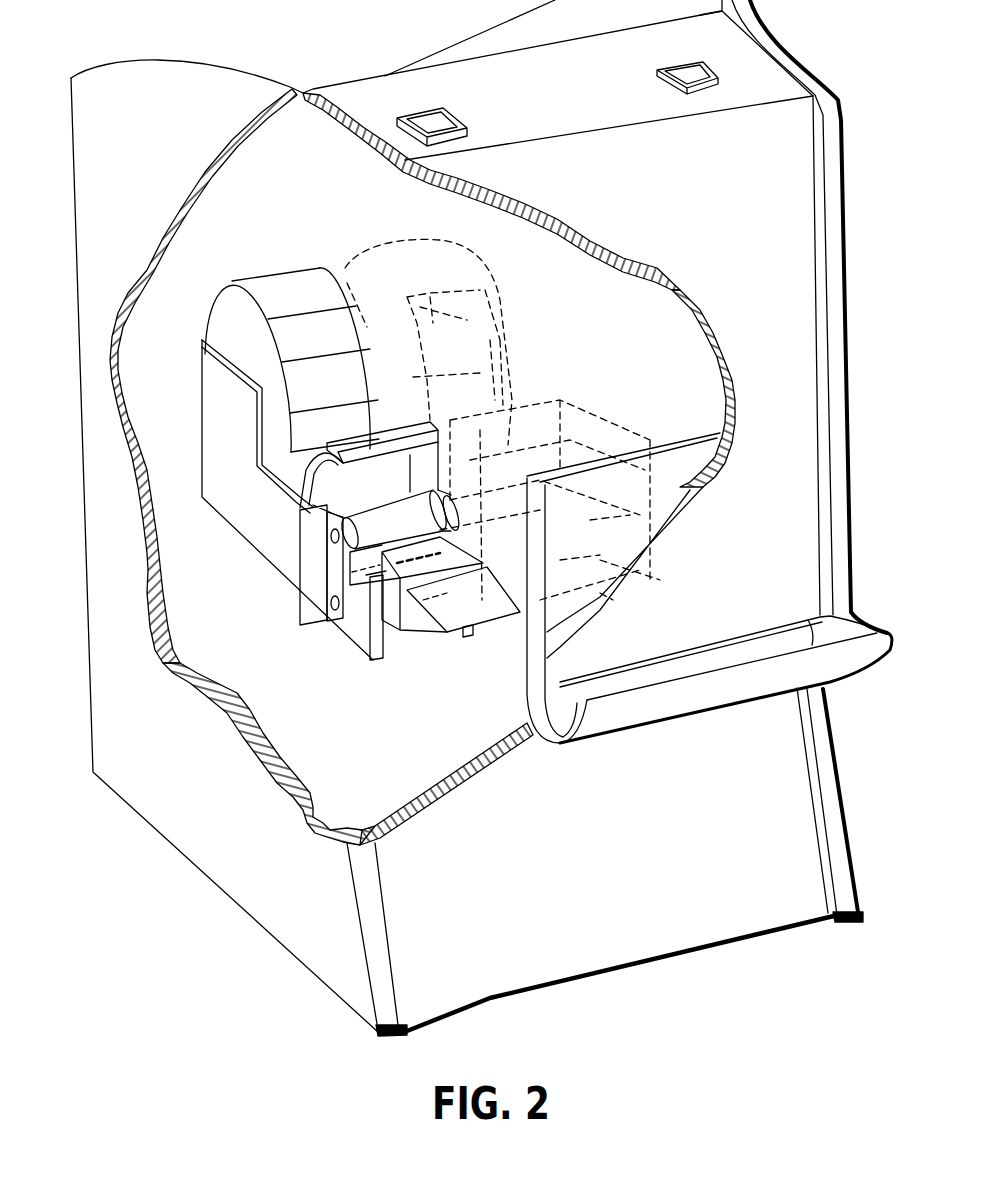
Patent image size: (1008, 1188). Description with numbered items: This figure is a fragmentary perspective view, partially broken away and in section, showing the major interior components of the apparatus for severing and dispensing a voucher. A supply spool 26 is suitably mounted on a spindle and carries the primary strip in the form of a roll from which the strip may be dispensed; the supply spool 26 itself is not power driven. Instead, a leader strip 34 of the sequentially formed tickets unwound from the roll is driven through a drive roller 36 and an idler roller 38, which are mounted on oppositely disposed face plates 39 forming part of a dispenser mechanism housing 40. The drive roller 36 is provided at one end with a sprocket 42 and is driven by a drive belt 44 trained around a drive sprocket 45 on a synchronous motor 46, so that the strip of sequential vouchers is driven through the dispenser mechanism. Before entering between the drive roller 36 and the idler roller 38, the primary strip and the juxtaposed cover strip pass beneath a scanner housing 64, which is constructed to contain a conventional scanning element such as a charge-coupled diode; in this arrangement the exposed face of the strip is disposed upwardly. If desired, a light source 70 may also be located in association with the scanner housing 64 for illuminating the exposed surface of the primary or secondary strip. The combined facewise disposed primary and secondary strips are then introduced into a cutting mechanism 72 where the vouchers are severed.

The supply spool 26 is at (217, 305).
The leader strip 34 is at (297, 493).
The drive roller 36 is at (393, 498).
The idler roller 38 is at (462, 572).
The face plates 39 is at (217, 497).
The dispenser mechanism housing 40 is at (190, 490).
The sprocket 42 is at (320, 537).
The drive belt 44 is at (330, 583).
The drive sprocket 45 is at (333, 588).
The synchronous motor 46 is at (367, 612).
The scanner housing 64 is at (367, 440).
The light source 70 is at (330, 452).
The cutting mechanism 72 is at (452, 654).